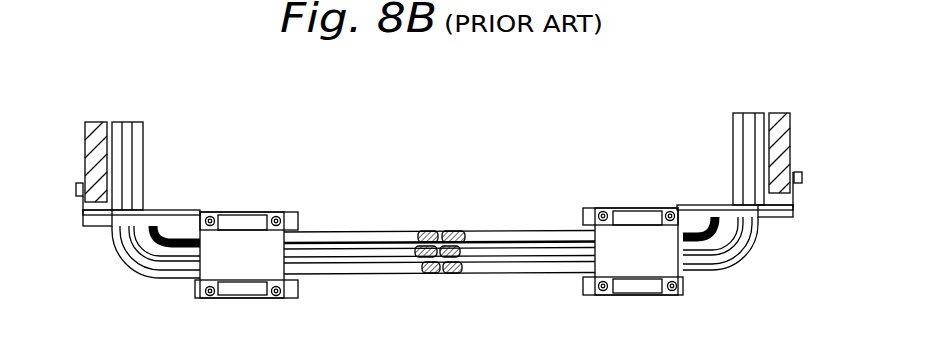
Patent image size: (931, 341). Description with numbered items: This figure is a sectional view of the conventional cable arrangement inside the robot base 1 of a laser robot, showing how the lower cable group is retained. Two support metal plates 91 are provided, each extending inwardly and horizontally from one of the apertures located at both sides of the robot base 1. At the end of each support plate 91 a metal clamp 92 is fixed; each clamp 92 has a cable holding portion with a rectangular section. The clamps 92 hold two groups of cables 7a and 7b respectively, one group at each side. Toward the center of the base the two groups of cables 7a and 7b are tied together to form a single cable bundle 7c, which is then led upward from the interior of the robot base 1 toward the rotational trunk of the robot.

The robot base 1 is at (788, 159).
The support metal plate 91 is at (102, 224).
The metal clamp 92 is at (273, 272).
The group of cables 7a is at (347, 242).
The group of cables 7b is at (519, 238).
The cable bundle 7c is at (443, 273).